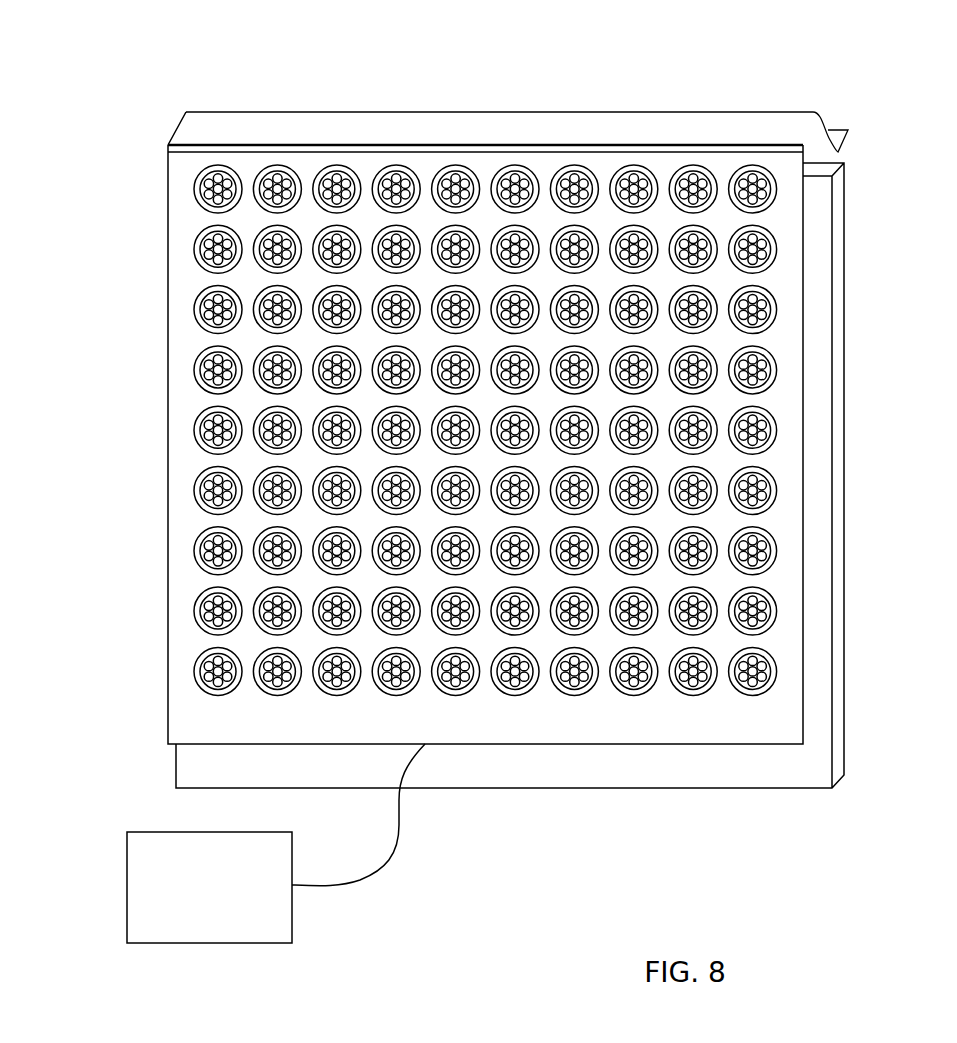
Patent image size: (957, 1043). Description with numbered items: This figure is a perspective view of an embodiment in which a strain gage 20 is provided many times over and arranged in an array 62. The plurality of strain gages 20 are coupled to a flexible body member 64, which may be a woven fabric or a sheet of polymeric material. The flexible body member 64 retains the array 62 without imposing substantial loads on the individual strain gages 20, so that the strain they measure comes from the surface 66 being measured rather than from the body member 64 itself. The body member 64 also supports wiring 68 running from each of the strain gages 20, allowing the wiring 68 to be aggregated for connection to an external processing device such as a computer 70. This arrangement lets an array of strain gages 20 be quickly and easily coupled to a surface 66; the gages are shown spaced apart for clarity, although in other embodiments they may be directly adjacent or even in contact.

The strain gage 20 is at (195, 192).
The array 62 is at (176, 491).
The flexible body member 64 is at (293, 112).
The surface 66 is at (742, 761).
The wiring 68 is at (402, 838).
The computer 70 is at (233, 943).